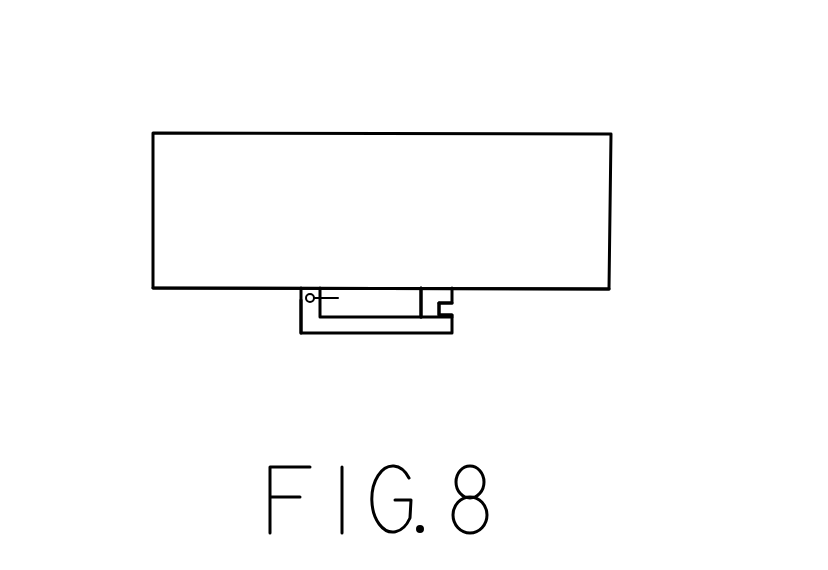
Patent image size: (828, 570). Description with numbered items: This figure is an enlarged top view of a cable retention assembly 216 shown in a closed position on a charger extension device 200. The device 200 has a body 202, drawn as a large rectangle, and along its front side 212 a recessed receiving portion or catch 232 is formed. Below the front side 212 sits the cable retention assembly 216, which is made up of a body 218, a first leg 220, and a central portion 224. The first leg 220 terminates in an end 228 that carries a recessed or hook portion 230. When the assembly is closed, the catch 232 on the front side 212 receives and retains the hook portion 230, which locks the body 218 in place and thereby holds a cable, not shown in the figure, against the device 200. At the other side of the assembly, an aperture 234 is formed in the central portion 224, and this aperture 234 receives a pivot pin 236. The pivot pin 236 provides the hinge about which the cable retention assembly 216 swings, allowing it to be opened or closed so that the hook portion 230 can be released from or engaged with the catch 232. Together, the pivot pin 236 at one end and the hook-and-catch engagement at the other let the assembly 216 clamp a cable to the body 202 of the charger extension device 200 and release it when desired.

The charger extension device 200 is at (410, 94).
The body 202 is at (149, 219).
The front side 212 is at (175, 289).
The cable retention assembly 216 is at (411, 382).
The body 218 is at (342, 340).
The first leg 220 is at (433, 330).
The central portion 224 is at (300, 315).
The end 228 is at (452, 322).
The hook portion 230 is at (450, 309).
The catch 232 is at (432, 300).
The aperture 234 is at (309, 293).
The pivot pin 236 is at (345, 303).